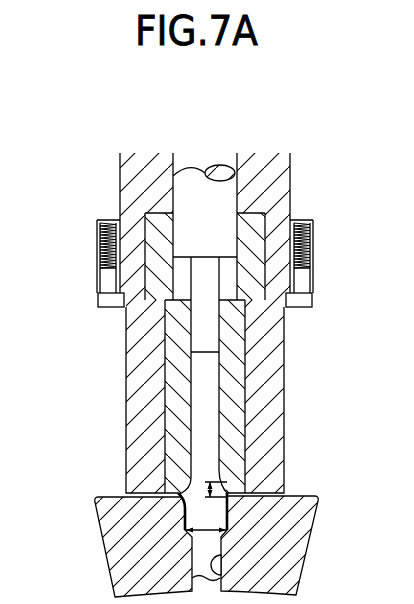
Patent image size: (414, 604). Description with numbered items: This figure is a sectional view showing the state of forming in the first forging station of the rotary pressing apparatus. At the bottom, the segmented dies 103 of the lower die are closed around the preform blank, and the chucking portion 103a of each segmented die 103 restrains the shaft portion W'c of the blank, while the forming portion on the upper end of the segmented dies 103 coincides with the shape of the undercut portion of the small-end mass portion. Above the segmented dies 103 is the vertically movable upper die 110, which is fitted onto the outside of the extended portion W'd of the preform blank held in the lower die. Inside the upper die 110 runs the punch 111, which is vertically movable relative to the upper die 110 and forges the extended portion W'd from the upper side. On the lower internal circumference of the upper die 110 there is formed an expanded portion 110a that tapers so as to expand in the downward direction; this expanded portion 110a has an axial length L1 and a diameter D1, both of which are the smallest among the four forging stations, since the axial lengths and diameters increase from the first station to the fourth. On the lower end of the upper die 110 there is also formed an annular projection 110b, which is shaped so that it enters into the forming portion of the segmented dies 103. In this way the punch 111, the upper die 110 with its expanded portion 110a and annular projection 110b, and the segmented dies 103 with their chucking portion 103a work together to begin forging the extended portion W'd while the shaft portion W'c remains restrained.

The upper die 110 is at (238, 406).
The punch 111 is at (210, 335).
The expanded portion 110a is at (185, 497).
The annular projection 110b is at (181, 501).
The segmented dies 103 is at (118, 527).
The chucking portion 103a is at (224, 566).
The diameter of the expanded portion D1 is at (185, 532).
The axial length of the expanded portion L1 is at (228, 494).
The extended portion W'd is at (136, 376).
The shaft portion W'c is at (135, 583).